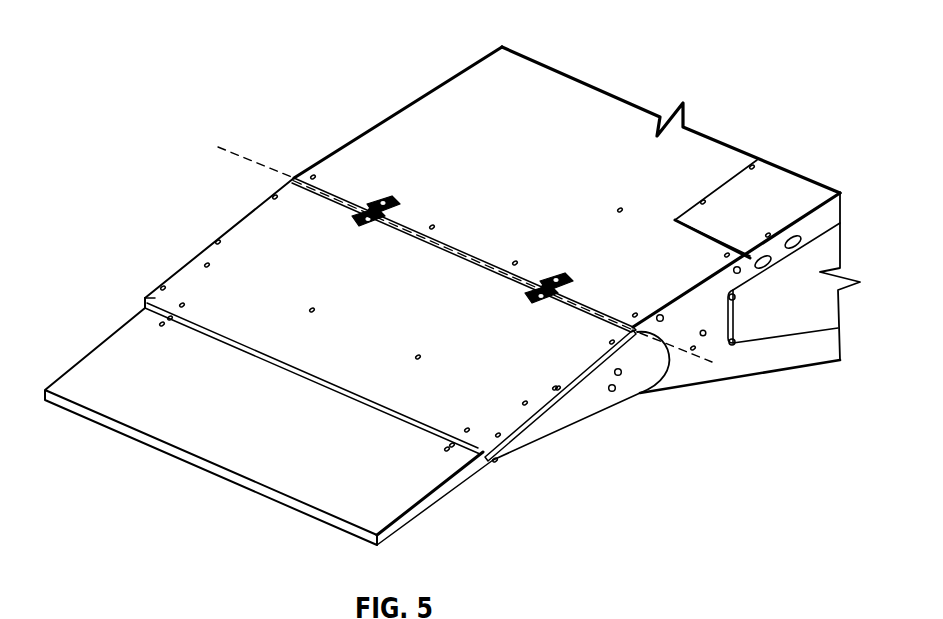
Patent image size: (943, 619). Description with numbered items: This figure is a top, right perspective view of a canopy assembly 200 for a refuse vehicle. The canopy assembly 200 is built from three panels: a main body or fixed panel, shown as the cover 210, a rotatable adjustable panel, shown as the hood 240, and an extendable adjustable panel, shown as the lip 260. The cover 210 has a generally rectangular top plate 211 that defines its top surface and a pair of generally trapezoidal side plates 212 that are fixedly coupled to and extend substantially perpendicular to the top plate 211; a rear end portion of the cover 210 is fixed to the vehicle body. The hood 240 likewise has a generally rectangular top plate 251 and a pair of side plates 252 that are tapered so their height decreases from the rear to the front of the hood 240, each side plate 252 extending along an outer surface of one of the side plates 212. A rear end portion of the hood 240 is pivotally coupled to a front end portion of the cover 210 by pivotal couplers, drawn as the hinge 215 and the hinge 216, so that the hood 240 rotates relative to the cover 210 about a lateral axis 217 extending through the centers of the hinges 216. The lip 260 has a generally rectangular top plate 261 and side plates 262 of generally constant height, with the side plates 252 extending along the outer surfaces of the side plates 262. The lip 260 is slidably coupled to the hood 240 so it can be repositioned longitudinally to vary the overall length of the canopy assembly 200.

The canopy assembly 200 is at (252, 42).
The cover 210 is at (705, 142).
The top plate 211 is at (627, 117).
The side plates 212 is at (740, 366).
The hinge 215 is at (555, 280).
The hinges 216 is at (370, 200).
The axis 217 is at (237, 150).
The hood 240 is at (238, 220).
The top plate 251 is at (490, 425).
The side plates 252 is at (573, 415).
The lip 260 is at (127, 327).
The top plate 261 is at (403, 492).
The side plates 262 is at (350, 530).